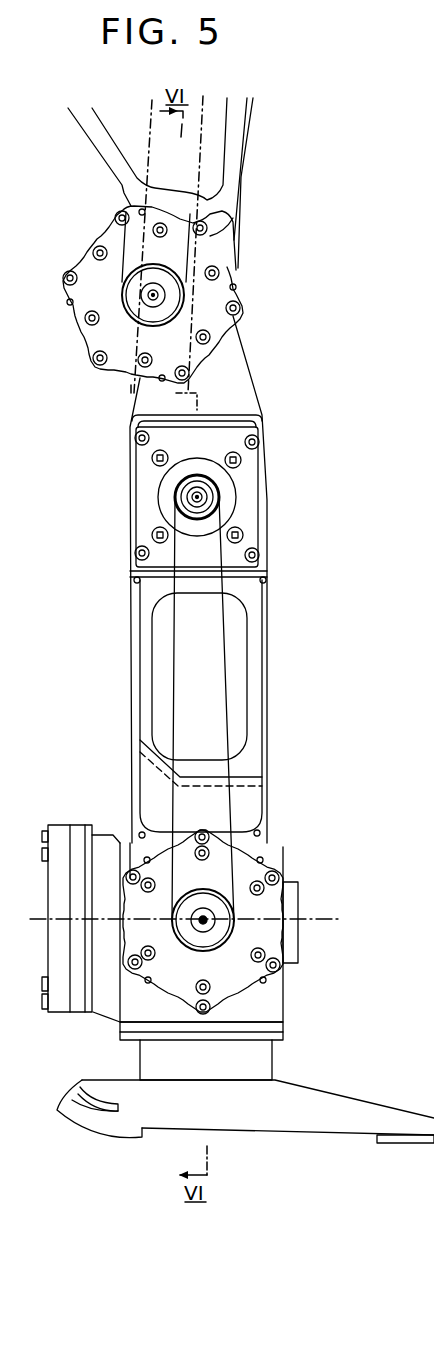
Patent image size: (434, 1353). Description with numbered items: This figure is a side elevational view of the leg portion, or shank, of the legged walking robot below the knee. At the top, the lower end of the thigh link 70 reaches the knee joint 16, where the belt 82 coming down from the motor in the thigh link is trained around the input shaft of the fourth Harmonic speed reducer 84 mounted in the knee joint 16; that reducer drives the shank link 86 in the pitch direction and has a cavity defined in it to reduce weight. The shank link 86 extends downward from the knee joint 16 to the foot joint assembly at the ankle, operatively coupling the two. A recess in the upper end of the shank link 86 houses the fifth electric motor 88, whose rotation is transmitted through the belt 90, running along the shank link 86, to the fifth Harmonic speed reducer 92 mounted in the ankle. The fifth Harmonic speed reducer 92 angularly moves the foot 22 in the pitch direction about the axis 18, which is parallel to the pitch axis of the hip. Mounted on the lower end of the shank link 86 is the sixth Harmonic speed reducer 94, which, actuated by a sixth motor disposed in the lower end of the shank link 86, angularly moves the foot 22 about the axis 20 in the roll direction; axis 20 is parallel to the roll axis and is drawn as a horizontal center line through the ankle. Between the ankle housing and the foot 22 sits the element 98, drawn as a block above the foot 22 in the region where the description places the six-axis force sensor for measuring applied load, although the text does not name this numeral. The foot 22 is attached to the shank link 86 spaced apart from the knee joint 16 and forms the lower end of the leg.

The knee joint 16 is at (155, 295).
The ankle pitch axis 18 is at (205, 922).
The ankle roll axis 20 is at (317, 923).
The foot 22 is at (358, 1117).
The thigh link 70 is at (246, 147).
The belt 82 is at (193, 214).
The fourth Harmonic speed reducer 84 is at (103, 337).
The shank link 86 is at (254, 663).
The fifth electric motor 88 is at (233, 494).
The belt 90 is at (250, 573).
The fifth Harmonic speed reducer 92 is at (262, 907).
The sixth Harmonic speed reducer 94 is at (101, 858).
The support block 98 is at (252, 1067).